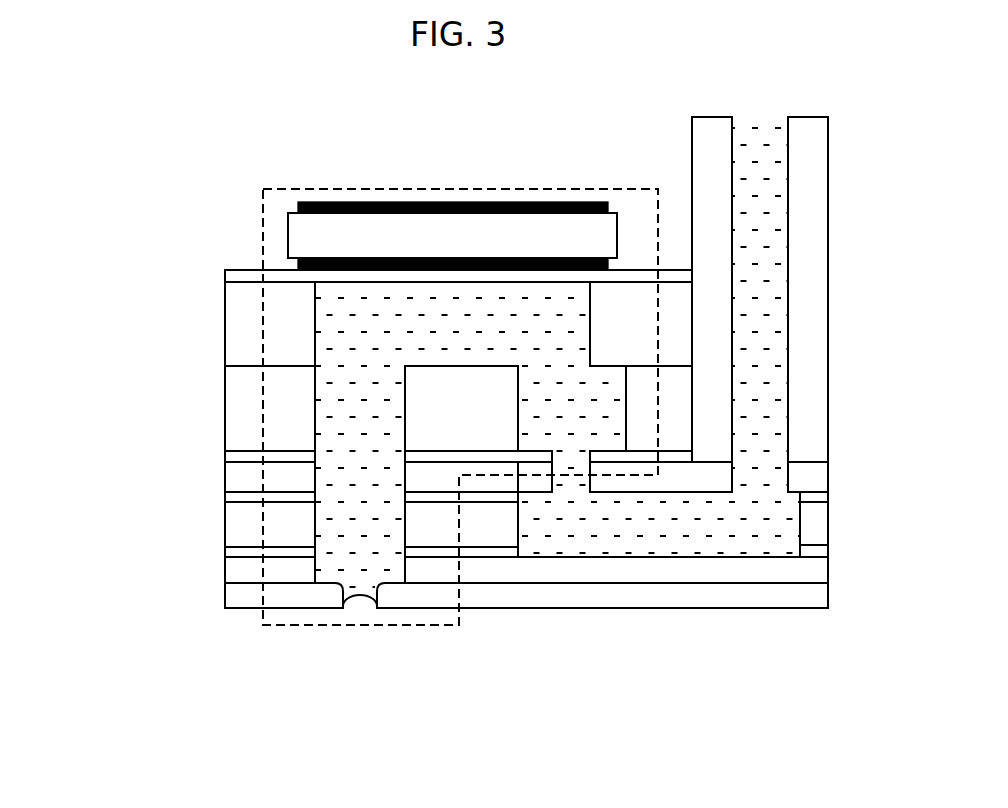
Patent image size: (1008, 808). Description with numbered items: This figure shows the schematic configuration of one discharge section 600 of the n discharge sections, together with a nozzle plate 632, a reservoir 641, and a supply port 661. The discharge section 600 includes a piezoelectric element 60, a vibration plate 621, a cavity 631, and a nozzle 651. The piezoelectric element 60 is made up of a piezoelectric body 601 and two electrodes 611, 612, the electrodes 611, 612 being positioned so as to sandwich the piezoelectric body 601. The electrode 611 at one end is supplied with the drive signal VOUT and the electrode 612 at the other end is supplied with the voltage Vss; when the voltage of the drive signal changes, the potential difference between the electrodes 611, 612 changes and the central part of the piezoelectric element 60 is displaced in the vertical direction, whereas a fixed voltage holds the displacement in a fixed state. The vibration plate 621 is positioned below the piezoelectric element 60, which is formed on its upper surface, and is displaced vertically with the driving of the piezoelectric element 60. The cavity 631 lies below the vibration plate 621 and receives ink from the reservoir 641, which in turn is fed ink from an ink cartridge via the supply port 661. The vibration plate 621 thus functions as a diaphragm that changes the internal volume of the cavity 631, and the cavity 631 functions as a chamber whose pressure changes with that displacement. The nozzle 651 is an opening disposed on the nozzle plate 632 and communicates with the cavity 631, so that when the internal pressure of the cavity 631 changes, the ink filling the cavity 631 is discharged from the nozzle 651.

The piezoelectric element 60 is at (352, 218).
The electrode 611 is at (305, 207).
The piezoelectric body 601 is at (308, 237).
The electrode 612 is at (306, 263).
The vibration plate 621 is at (225, 276).
The cavity 631 is at (385, 414).
The nozzle plate 632 is at (260, 609).
The reservoir 641 is at (667, 528).
The nozzle 651 is at (362, 607).
The discharge section 600 is at (447, 627).
The supply port 661 is at (765, 105).